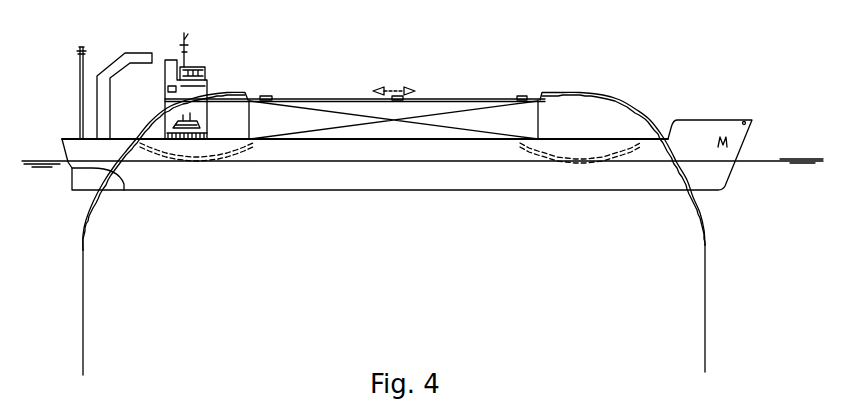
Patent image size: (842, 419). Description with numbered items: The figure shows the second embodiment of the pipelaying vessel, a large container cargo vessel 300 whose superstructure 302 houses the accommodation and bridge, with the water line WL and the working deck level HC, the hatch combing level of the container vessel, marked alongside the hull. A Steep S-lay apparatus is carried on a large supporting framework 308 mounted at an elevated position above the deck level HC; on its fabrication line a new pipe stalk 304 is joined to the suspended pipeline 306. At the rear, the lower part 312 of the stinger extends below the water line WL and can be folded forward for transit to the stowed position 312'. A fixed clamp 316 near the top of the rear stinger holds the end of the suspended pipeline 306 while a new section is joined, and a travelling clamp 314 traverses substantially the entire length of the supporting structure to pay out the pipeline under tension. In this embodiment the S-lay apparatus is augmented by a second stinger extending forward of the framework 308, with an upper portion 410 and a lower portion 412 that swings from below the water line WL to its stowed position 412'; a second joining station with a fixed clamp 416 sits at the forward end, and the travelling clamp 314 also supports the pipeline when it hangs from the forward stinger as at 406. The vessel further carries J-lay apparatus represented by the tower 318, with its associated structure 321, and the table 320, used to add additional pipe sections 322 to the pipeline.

The container cargo vessel 300 is at (718, 120).
The superstructure 302 is at (200, 80).
The pipe stalk 304 is at (503, 98).
The suspended pipeline 306 is at (85, 297).
The supporting framework 308 is at (537, 122).
The lower part of the stinger 312 is at (138, 171).
The folded lower stinger portion 312' is at (202, 183).
The travelling clamp 314 is at (400, 95).
The fixed clamp 316 is at (266, 96).
The J-lay tower 318 is at (80, 103).
The table 320 is at (77, 138).
The bent support arm 321 is at (149, 55).
The additional pipe sections 322 is at (78, 57).
The pipeline suspended from forward stinger 406 is at (705, 318).
The upper portion of the second stinger 410 is at (642, 118).
The lower portion of the second stinger 412 is at (661, 168).
The stowed lower portion of the second stinger 412' is at (560, 181).
The second fixed clamp 416 is at (522, 97).
The working deck level HC is at (420, 139).
The water line WL is at (492, 162).